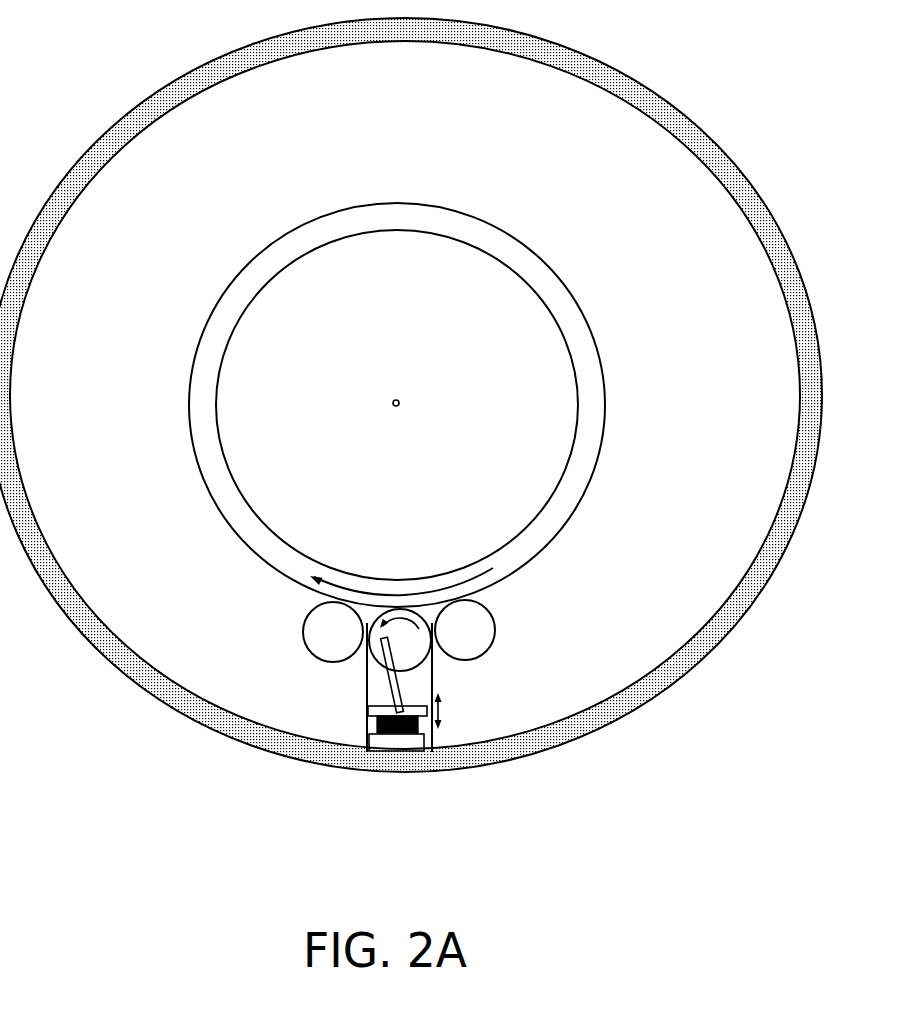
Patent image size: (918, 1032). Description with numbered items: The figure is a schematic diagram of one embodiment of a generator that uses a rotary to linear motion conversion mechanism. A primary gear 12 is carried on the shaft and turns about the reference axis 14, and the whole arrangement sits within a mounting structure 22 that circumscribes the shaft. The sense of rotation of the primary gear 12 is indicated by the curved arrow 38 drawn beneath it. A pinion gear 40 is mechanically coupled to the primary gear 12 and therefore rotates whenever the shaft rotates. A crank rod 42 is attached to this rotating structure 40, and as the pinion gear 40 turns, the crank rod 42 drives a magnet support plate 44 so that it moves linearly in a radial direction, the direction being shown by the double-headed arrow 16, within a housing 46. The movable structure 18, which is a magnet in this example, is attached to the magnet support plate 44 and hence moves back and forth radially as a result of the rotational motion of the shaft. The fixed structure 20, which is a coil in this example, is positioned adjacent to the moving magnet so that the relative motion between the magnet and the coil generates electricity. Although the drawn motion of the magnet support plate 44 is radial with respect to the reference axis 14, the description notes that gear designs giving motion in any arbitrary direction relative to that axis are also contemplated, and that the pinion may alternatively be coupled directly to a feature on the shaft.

The mounting structure 22 is at (165, 95).
The primary gear 12 is at (273, 262).
The reference axis 14 is at (398, 401).
The direction of rotation 38 is at (375, 592).
The pinion gear 40 is at (407, 650).
The crank rod 42 is at (393, 677).
The magnet support plate 44 is at (367, 703).
The housing 46 is at (432, 683).
The movable structure 18 is at (372, 720).
The fixed structure 20 is at (383, 743).
The arrow 16 is at (439, 713).